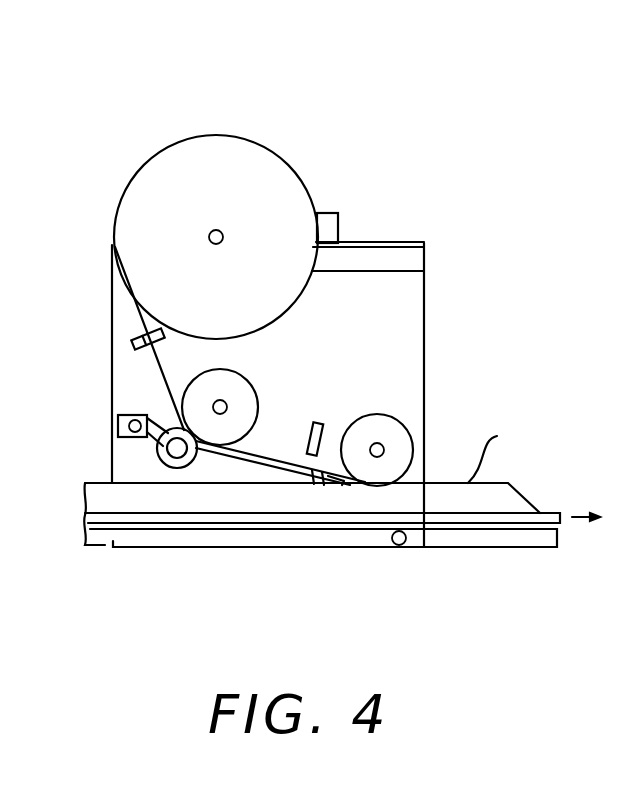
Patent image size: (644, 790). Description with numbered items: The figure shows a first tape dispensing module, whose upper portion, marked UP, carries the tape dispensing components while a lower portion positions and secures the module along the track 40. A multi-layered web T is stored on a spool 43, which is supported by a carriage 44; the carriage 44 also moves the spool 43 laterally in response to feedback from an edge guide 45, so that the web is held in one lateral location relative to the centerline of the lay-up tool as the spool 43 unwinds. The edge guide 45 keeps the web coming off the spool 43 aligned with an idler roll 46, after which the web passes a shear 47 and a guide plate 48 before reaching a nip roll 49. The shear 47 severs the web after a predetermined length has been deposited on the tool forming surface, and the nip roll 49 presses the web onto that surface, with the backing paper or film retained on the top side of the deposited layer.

The track 40 is at (320, 562).
The spool 43 is at (233, 131).
The carriage 44 is at (268, 338).
The edge guide 45 is at (133, 343).
The idler roll 46 is at (255, 385).
The shear 47 is at (304, 444).
The guide plate 48 is at (335, 481).
The nip roll 49 is at (403, 417).